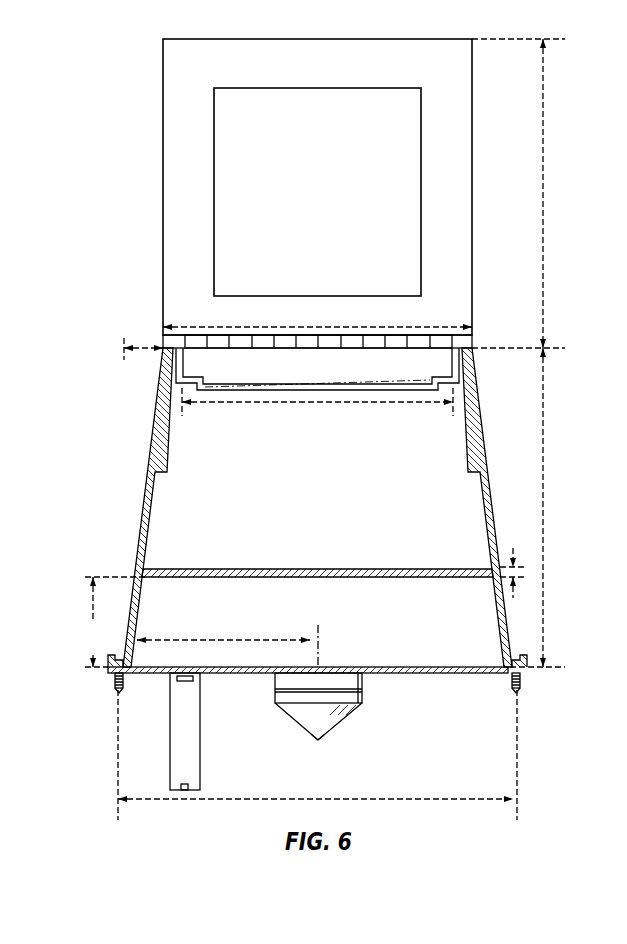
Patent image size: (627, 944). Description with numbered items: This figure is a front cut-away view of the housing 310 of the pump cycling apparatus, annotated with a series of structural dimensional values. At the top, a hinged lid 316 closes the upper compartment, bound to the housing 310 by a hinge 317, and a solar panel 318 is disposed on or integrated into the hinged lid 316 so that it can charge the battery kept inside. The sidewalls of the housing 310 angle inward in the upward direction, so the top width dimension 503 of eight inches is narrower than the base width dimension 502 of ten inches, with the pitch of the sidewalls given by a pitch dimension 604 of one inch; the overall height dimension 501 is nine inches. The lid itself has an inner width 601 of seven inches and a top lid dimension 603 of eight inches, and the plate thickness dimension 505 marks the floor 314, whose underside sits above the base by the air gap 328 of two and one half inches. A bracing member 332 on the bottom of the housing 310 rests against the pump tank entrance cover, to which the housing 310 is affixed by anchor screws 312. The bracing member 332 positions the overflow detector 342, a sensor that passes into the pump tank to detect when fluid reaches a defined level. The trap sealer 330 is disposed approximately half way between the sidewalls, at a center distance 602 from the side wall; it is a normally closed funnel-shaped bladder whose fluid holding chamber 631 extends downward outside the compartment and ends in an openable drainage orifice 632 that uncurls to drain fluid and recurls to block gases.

The housing 310 is at (101, 49).
The hinged lid 316 is at (339, 75).
The solar panel 318 is at (339, 203).
The hinge 317 is at (474, 347).
The floor 314 is at (225, 569).
The bracing member 332 is at (420, 673).
The anchor screws 312 is at (114, 683).
The trap sealer 330 is at (363, 702).
The fluid holding chamber 631 is at (292, 720).
The openable drainage orifice 632 is at (309, 740).
The overflow detector 342 is at (200, 755).
The top lid dimension 603 is at (307, 327).
The pitch dimension 604 is at (157, 346).
The top width dimension 503 is at (543, 192).
The height dimension 501 is at (543, 400).
The inner width 601 is at (312, 403).
The plate thickness dimension 505 is at (513, 600).
The air gap 328 is at (98, 622).
The half-width dimension 602 is at (214, 640).
The base width dimension 502 is at (385, 800).